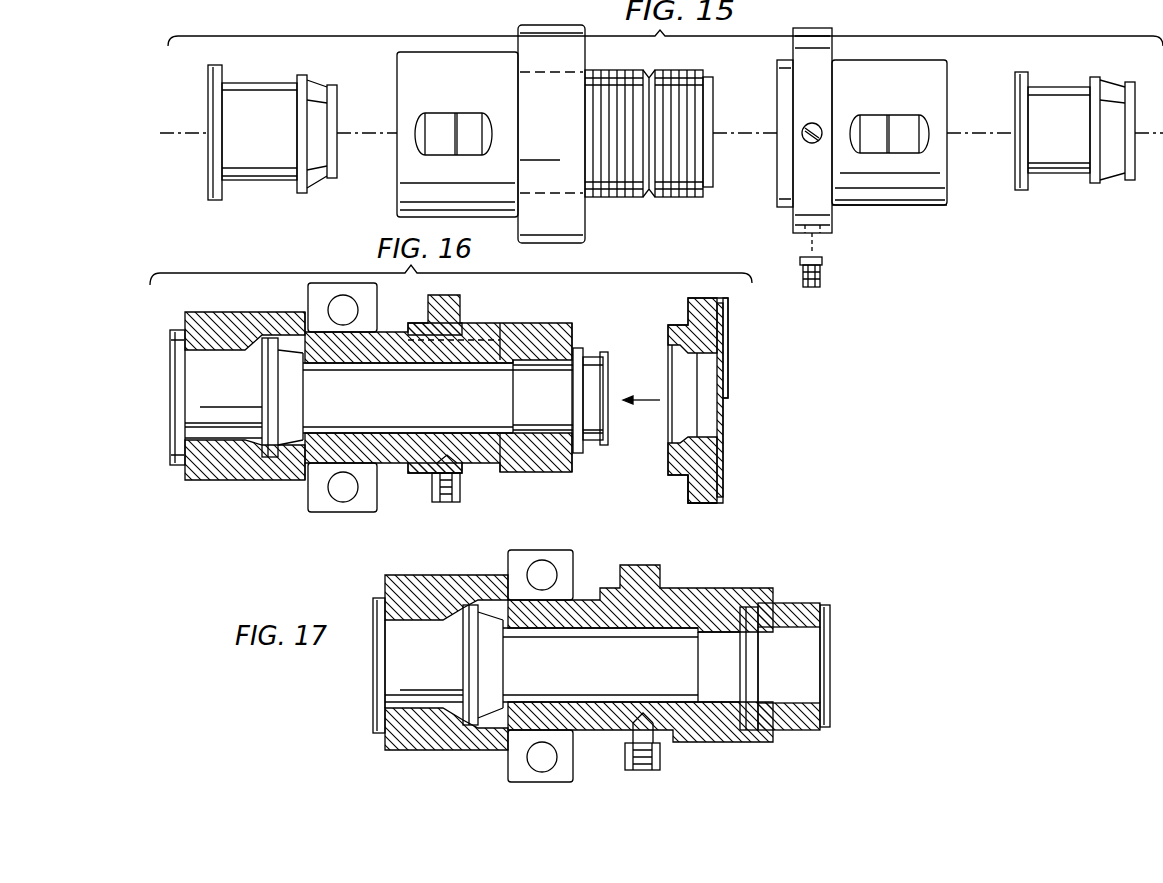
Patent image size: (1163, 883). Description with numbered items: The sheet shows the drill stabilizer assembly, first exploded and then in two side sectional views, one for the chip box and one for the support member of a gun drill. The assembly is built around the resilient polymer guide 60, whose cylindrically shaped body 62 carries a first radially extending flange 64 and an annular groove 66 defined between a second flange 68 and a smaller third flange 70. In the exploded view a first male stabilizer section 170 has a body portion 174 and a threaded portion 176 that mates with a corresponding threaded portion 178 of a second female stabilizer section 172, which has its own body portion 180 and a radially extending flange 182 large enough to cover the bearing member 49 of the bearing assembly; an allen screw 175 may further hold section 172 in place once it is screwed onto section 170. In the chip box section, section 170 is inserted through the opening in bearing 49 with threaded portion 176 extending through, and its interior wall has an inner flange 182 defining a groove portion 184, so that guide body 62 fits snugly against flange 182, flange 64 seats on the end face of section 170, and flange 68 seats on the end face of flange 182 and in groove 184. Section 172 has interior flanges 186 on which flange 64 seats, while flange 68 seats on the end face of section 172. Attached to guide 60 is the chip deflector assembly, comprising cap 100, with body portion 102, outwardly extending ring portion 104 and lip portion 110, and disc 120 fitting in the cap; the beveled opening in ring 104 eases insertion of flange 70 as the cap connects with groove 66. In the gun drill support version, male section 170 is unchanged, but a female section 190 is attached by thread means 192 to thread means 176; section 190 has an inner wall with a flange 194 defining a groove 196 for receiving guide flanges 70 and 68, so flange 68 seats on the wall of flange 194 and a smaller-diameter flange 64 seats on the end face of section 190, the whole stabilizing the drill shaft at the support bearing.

In FIG. 15, the ball bearing assembly 49 is at (530, 33).
In FIG. 16, the ball bearing assembly 49 is at (377, 303).
In FIG. 17, the ball bearing assembly 49 is at (508, 773).
In FIG. 15, the guide 60 is at (263, 95).
In FIG. 16, the body 62 is at (237, 396).
In FIG. 17, the body 62 is at (437, 671).
In FIG. 16, the first radially extending flange 64 is at (180, 465).
In FIG. 17, the first radially extending flange 64 is at (377, 595).
In FIG. 16, the annular groove 66 is at (593, 440).
In FIG. 16, the second radially extending flange 68 is at (575, 350).
In FIG. 17, the second radially extending flange 68 is at (473, 575).
In FIG. 16, the third radially extending flange 70 is at (607, 357).
In FIG. 16, the cap 100 is at (702, 300).
In FIG. 16, the body portion 102 is at (698, 502).
In FIG. 16, the outwardly extending ring portion 104 is at (677, 322).
In FIG. 16, the lip portion 110 is at (730, 305).
In FIG. 16, the disc 120 is at (722, 452).
In FIG. 17, the first male stabilizer section 170 is at (403, 747).
In FIG. 15, the second female stabilizer section 172 is at (890, 203).
In FIG. 15, the body portion 174 is at (436, 63).
In FIG. 16, the body portion 174 is at (230, 482).
In FIG. 15, the allen screw 175 is at (823, 268).
In FIG. 16, the allen screw 175 is at (462, 495).
In FIG. 17, the allen screw 175 is at (643, 768).
In FIG. 15, the threaded portion 176 is at (397, 78).
In FIG. 16, the threaded portion 178 is at (488, 332).
In FIG. 15, the body portion 180 is at (927, 85).
In FIG. 15, the radially extending flange 182 is at (813, 37).
In FIG. 16, the radially extending flange 182 is at (215, 323).
In FIG. 16, the groove portion 184 is at (273, 340).
In FIG. 16, the interior flanges 186 is at (545, 470).
In FIG. 17, the female section 190 is at (725, 733).
In FIG. 17, the thread means 192 is at (677, 590).
In FIG. 17, the flange 194 is at (802, 727).
In FIG. 17, the groove 196 is at (767, 743).